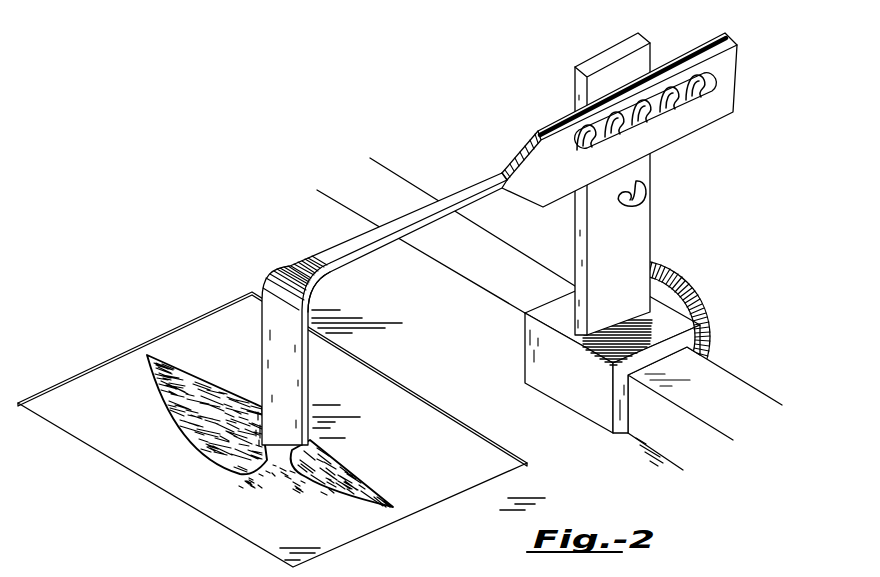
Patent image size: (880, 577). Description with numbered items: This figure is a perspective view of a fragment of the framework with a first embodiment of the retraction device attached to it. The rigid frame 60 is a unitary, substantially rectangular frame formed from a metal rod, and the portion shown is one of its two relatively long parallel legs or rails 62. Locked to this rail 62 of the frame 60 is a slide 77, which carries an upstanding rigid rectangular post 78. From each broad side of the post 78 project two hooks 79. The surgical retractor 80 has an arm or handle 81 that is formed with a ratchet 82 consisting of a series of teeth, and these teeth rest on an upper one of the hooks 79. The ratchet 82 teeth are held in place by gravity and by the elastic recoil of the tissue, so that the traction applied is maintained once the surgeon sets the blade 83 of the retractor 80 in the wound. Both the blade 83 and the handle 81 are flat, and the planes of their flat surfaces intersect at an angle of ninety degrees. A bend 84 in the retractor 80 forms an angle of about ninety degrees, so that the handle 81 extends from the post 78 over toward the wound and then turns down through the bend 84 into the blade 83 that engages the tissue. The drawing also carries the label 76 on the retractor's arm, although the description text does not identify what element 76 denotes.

The rigid frame 60 is at (410, 172).
The rail 62 is at (753, 386).
The bent arm 76 is at (338, 250).
The slide 77 is at (687, 341).
The post 78 is at (652, 247).
The hooks 79 is at (648, 194).
The surgical retractor 80 is at (286, 266).
The handle 81 is at (527, 144).
The ratchet 82 is at (707, 87).
The blade 83 is at (259, 325).
The bend 84 is at (312, 292).